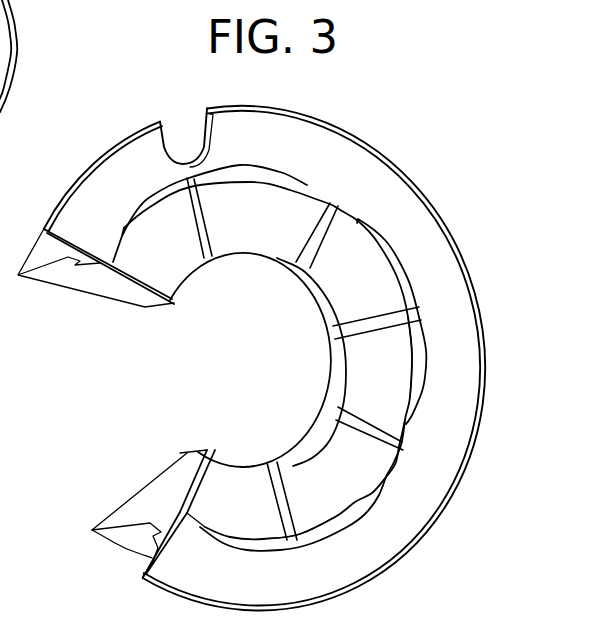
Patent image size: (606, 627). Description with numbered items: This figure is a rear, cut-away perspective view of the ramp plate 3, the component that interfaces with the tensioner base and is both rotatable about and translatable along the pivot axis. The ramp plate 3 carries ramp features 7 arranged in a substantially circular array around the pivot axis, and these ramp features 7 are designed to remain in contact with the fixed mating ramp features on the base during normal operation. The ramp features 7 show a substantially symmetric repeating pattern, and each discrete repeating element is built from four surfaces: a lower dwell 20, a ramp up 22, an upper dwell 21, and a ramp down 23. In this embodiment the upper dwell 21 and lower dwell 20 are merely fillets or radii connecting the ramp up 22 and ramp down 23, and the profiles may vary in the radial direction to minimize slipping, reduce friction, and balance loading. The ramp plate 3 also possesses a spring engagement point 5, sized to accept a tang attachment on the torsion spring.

The ramp plate 3 is at (403, 171).
The spring engagement point 5 is at (185, 142).
The ramp features 7 is at (283, 272).
The lower dwell 20 is at (332, 330).
The upper dwell 21 is at (340, 403).
The ramp up 22 is at (373, 367).
The ramp down 23 is at (313, 467).